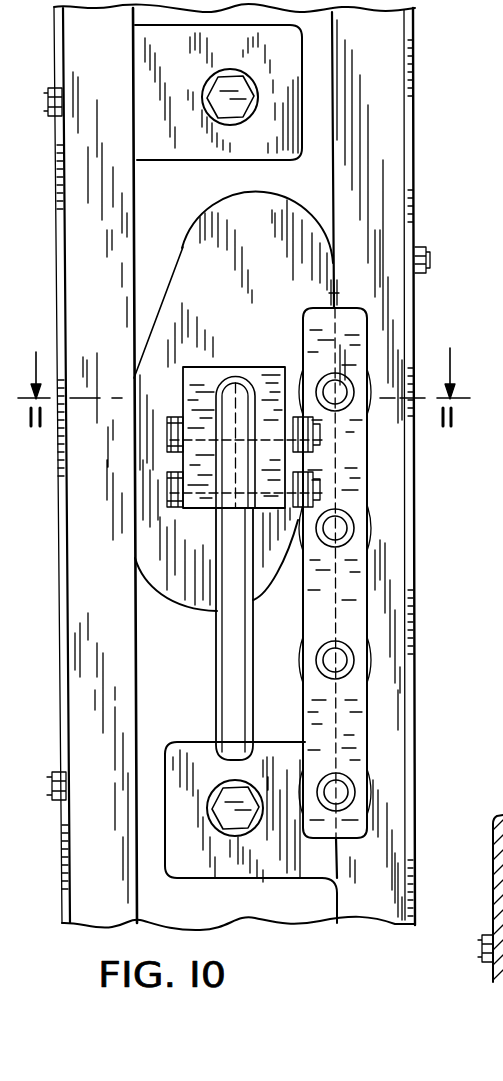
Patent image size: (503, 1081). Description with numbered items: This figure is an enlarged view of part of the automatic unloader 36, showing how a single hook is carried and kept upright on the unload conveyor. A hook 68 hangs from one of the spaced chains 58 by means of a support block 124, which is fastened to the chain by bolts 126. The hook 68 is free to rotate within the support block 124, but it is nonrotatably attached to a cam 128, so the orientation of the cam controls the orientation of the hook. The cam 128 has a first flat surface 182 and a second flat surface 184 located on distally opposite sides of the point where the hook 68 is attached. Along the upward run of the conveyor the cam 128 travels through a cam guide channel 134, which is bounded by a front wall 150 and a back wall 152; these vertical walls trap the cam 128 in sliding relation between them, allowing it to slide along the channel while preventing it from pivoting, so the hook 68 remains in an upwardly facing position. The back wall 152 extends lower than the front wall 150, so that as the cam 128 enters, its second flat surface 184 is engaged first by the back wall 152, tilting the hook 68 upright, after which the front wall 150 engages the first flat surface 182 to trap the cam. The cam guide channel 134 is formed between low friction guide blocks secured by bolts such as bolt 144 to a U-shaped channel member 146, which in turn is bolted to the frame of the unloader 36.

The automatic unloader 36 is at (53, 156).
The chain 58 is at (350, 610).
The hook 68 is at (234, 703).
The support block 124 is at (206, 380).
The bolts 126 is at (167, 440).
The cam 128 is at (186, 240).
The cam guide channel 134 is at (320, 186).
The bolt 144 is at (480, 955).
The U-shaped channel member 146 is at (488, 925).
The front wall 150 is at (333, 212).
The back wall 152 is at (146, 298).
The first flat surface 182 is at (335, 289).
The second flat surface 184 is at (125, 543).